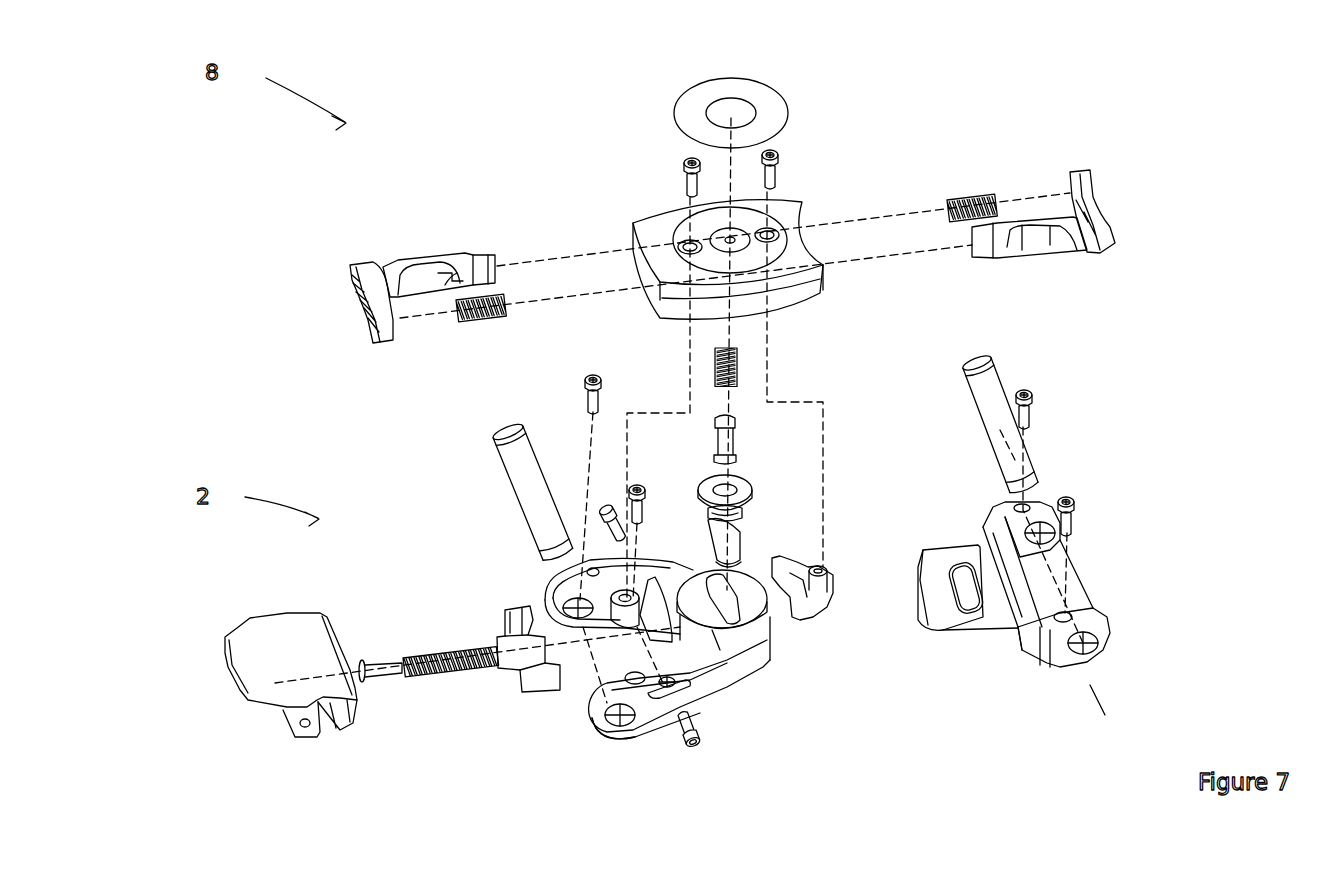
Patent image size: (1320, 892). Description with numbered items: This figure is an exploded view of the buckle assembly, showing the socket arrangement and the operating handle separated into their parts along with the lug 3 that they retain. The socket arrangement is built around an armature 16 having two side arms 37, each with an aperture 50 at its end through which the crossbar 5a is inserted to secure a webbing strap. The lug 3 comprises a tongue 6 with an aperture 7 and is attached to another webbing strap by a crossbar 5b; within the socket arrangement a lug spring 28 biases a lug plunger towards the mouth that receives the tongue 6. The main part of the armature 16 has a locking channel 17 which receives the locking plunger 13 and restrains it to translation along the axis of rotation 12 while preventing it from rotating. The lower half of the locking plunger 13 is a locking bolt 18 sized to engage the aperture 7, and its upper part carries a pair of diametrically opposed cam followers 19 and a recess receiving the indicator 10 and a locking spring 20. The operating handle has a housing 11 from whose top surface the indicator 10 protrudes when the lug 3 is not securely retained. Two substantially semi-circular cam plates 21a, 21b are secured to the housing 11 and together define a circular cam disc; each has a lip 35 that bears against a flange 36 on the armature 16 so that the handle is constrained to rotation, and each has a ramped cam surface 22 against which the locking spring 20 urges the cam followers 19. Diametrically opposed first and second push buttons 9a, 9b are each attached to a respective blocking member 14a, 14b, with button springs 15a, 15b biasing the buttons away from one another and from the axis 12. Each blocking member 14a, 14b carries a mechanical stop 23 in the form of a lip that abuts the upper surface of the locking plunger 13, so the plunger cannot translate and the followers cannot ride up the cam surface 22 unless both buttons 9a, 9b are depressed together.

The lug 3 is at (1083, 697).
The crossbar 5a is at (510, 465).
The crossbar 5b is at (990, 380).
The tongue 6 is at (975, 627).
The aperture 7 is at (958, 565).
The first push button 9a is at (369, 288).
The second push button 9b is at (1090, 225).
The indicator 10 is at (735, 437).
The housing 11 is at (823, 283).
The axis 12 is at (735, 118).
The locking plunger 13 is at (792, 518).
The blocking member 14a is at (390, 273).
The blocking member 14b is at (1062, 238).
The button spring 15a is at (490, 322).
The button spring 15b is at (985, 196).
The armature 16 is at (684, 653).
The locking channel 17 is at (730, 578).
The locking bolt 18 is at (742, 558).
The cam followers 19 is at (742, 514).
The locking spring 20 is at (738, 365).
The cam plate 21a is at (641, 609).
The cam plate 21b is at (830, 588).
The cam surface 22 is at (835, 605).
The mechanical stop 23 is at (457, 273).
The lug spring 28 is at (452, 668).
The lip 35 is at (534, 692).
The flange 36 is at (770, 618).
The side arms 37 is at (655, 697).
The aperture 50 is at (617, 733).